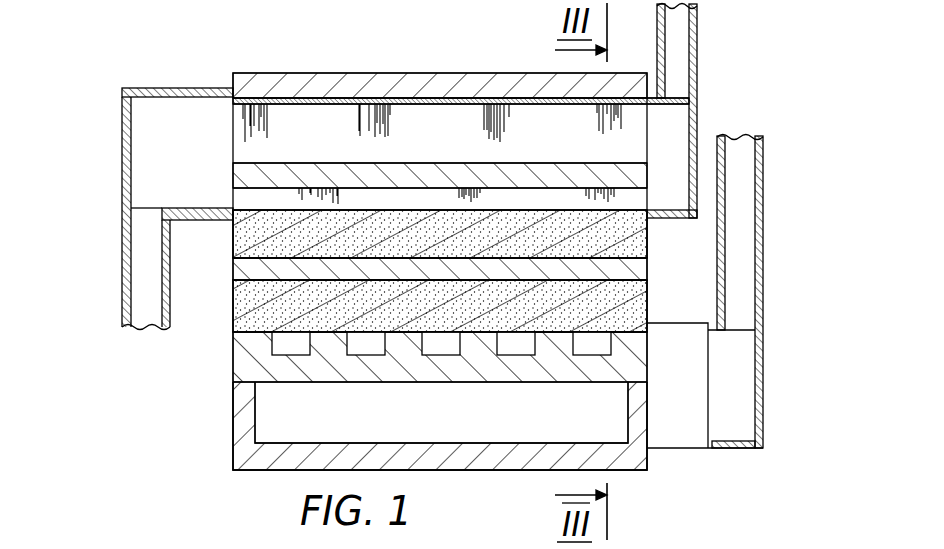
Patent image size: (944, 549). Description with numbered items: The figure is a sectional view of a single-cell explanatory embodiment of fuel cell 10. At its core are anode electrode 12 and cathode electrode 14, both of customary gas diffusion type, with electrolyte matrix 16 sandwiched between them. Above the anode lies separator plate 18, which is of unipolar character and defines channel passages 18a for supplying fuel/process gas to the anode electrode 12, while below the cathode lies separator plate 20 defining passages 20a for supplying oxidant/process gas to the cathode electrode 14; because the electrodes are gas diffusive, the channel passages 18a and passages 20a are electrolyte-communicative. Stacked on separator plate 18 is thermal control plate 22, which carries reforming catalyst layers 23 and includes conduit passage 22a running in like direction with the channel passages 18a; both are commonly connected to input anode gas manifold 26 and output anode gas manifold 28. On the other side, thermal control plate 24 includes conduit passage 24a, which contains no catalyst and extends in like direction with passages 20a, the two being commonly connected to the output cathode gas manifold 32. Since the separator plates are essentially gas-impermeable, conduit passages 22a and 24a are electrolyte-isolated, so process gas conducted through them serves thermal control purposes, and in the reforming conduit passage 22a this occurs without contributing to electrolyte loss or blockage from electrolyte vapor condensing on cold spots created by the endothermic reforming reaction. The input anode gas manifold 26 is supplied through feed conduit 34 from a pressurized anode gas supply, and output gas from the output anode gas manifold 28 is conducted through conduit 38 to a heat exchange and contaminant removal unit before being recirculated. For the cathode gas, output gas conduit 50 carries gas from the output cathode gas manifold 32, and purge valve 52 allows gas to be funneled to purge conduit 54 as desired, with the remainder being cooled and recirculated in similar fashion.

The fuel cell 10 is at (439, 292).
The anode electrode 12 is at (648, 241).
The cathode electrode 14 is at (641, 325).
The electrolyte matrix 16 is at (648, 281).
The separator plate 18 is at (408, 166).
The channel passages 18a is at (527, 185).
The separator plate 20 is at (405, 382).
The passages 20a is at (295, 346).
The thermal control plate 22 is at (461, 90).
The conduit passage 22a is at (300, 115).
The reforming catalyst layers 23 is at (353, 108).
The thermal control plate 24 is at (397, 426).
The conduit passage 24a is at (268, 417).
The input anode gas manifold 26 is at (192, 90).
The output anode gas manifold 28 is at (680, 118).
The output cathode gas manifold 32 is at (765, 441).
The feed conduit 34 is at (123, 260).
The conduit 38 is at (698, 45).
The output gas conduit 50 is at (764, 250).
The purge valve 52 is at (737, 548).
The purge conduit 54 is at (791, 545).